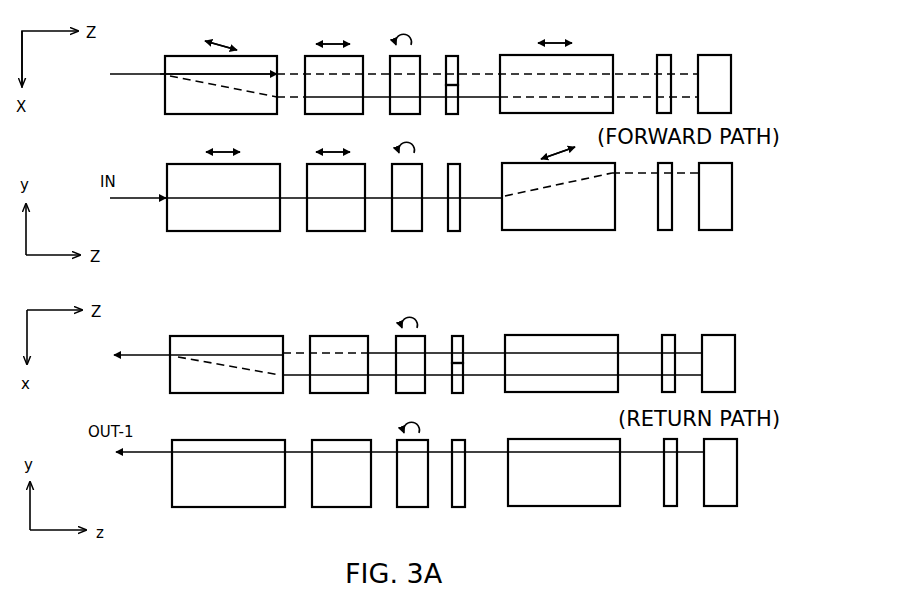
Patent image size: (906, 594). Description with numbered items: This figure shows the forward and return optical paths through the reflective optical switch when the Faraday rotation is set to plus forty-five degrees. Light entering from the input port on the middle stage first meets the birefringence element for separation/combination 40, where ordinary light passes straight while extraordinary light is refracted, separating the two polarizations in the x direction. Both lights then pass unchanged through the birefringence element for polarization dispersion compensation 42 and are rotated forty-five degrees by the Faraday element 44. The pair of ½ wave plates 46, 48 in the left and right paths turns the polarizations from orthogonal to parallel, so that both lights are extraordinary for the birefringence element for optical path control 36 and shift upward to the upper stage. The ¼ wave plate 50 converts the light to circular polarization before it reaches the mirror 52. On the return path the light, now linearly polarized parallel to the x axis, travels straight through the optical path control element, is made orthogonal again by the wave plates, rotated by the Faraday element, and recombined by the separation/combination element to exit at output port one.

The birefringence element for optical path control 36 is at (563, 220).
The birefringence element for separation/combination 40 is at (232, 225).
The birefringence element for polarization dispersion compensation 42 is at (336, 225).
The Faraday element 44 is at (404, 225).
The ½ wave plate 46 is at (452, 60).
The ½ wave plate 48 is at (452, 95).
The ¼ wave plate 50 is at (669, 222).
The mirror 52 is at (718, 220).